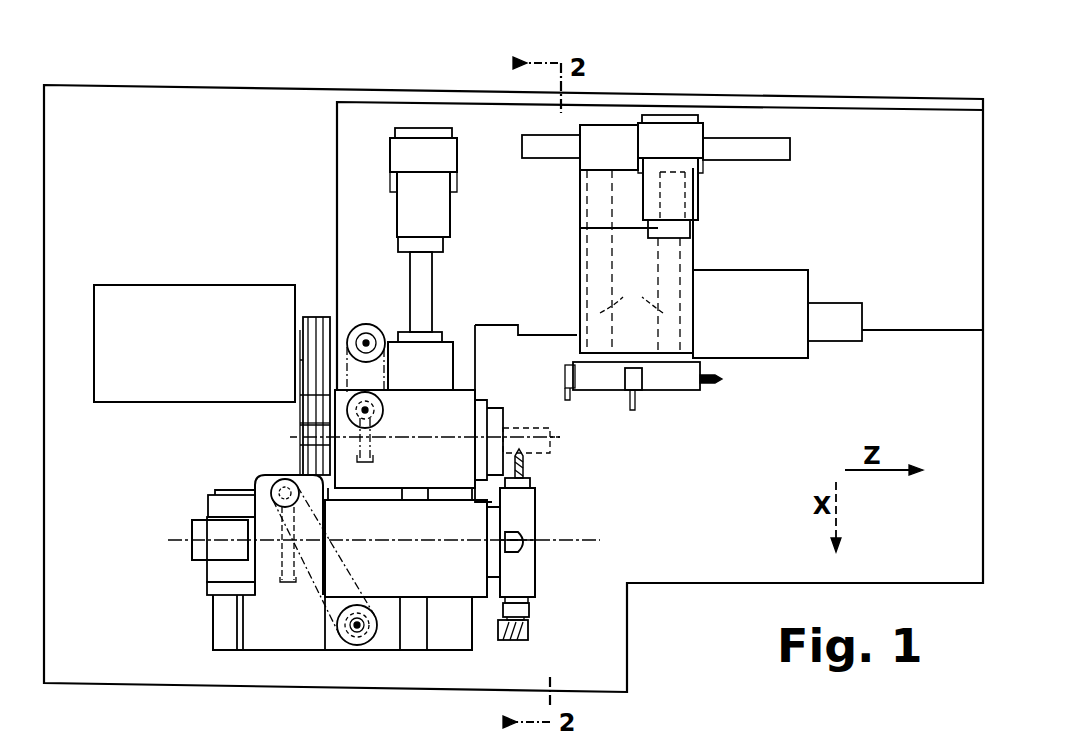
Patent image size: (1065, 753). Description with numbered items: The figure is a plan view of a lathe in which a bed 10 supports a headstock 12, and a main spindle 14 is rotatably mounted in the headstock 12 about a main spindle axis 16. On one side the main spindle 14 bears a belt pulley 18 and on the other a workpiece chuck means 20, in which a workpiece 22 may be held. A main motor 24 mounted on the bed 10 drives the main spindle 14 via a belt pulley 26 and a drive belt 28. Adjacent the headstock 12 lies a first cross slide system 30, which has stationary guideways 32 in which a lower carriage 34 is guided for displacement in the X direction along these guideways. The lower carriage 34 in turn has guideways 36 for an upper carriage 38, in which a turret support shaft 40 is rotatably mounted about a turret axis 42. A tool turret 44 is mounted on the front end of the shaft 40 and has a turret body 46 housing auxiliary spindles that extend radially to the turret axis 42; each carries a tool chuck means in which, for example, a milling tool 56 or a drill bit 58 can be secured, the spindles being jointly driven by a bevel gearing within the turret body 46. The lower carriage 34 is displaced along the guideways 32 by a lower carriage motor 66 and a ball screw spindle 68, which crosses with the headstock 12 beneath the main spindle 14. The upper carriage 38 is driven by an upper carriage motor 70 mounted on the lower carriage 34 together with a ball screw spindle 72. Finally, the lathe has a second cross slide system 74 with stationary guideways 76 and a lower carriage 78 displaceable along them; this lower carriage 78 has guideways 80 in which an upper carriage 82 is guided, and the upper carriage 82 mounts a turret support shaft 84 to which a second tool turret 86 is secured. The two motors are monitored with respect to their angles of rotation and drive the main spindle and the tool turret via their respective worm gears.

The bed 10 is at (967, 260).
The headstock 12 is at (436, 431).
The main spindle 14 is at (307, 423).
The main spindle axis 16 is at (558, 440).
The belt pulley 18 is at (302, 443).
The workpiece chuck means 20 is at (500, 395).
The workpiece 22 is at (528, 430).
The main motor 24 is at (202, 340).
The belt pulley 26 is at (329, 316).
The drive belt 28 is at (307, 383).
The first cross slide system 30 is at (302, 654).
The stationary guideways 32 is at (223, 632).
The lower carriage 34 is at (218, 567).
The guideways 36 is at (215, 503).
The upper carriage 38 is at (394, 573).
The turret support shaft 40 is at (492, 557).
The turret axis 42 is at (550, 540).
The tool turret 44 is at (545, 503).
The turret body 46 is at (522, 578).
The milling tool 56 is at (530, 632).
The drill bit 58 is at (523, 467).
The lower carriage motor 66 is at (433, 212).
The ball screw spindle 68 is at (422, 292).
The upper carriage motor 70 is at (205, 542).
The ball screw spindle 72 is at (250, 570).
The second cross slide system 74 is at (748, 127).
The stationary guideways 76 is at (777, 155).
The lower carriage 78 is at (582, 200).
The guideways 80 is at (631, 292).
The upper carriage 82 is at (580, 258).
The turret support shaft 84 is at (647, 360).
The second tool turret 86 is at (690, 397).